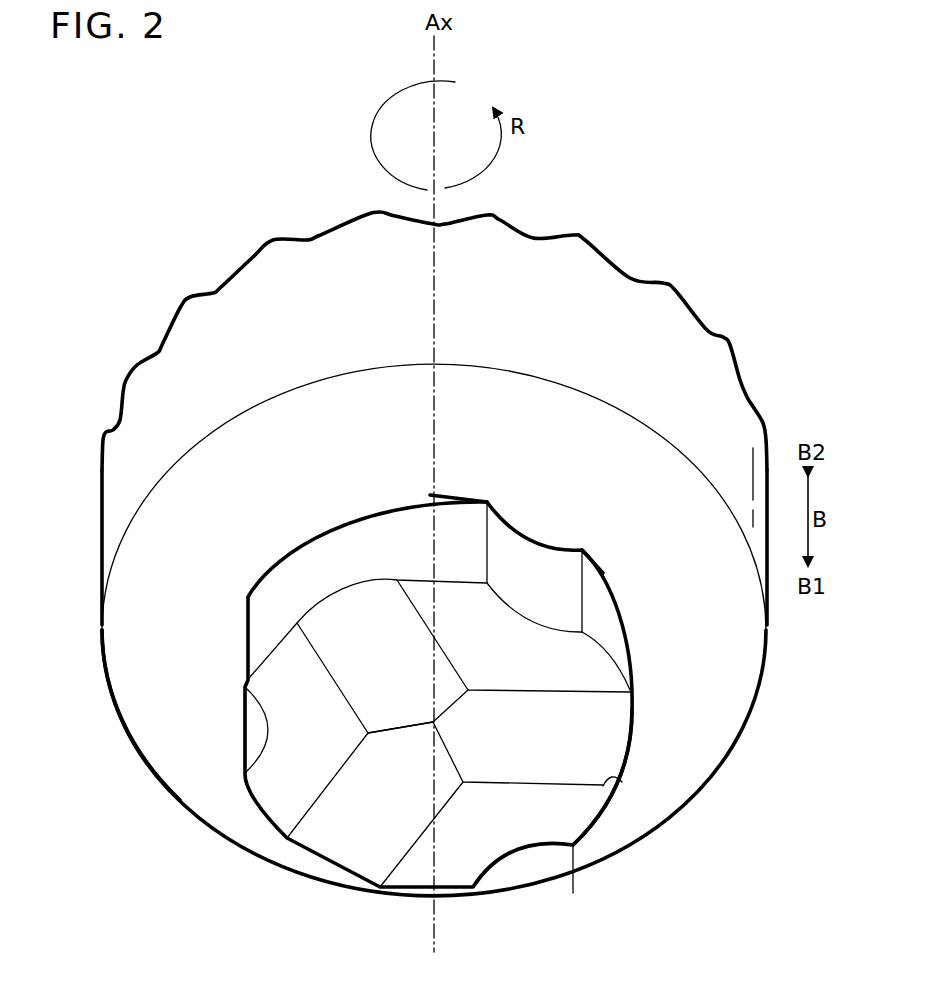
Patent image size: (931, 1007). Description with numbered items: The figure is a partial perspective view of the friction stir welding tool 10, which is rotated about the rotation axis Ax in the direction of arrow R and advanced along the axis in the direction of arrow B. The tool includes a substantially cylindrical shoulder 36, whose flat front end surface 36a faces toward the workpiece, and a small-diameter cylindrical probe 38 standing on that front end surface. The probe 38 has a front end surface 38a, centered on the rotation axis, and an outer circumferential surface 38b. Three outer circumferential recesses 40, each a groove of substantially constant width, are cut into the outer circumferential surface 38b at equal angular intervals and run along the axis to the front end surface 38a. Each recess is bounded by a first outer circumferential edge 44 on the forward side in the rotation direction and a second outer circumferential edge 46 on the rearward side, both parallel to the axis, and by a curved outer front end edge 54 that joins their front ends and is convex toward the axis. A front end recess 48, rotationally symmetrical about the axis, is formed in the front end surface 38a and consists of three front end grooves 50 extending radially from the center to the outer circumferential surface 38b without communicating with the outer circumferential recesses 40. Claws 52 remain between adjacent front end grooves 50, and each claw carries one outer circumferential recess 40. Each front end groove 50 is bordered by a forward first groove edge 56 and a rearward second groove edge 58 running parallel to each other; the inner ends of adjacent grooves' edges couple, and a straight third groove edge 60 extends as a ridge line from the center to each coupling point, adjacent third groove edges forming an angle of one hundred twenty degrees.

The welding tool 10 is at (140, 135).
The shoulder 36 is at (113, 525).
The front end surface of the shoulder 36a is at (133, 687).
The probe 38 is at (268, 830).
The front end surface of the probe 38a is at (493, 834).
The outer circumferential surface of the probe 38b is at (613, 604).
The outer circumferential recess 40 is at (530, 558).
The first outer circumferential edge 44 is at (484, 516).
The second outer circumferential edge 46 is at (582, 575).
The front end recess 48 is at (609, 754).
The front end groove 50 is at (365, 603).
The claw 52 is at (587, 660).
The outer front end edge 54 is at (523, 622).
The first groove edge 56 is at (308, 632).
The second groove edge 58 is at (415, 604).
The third groove edge 60 is at (394, 728).